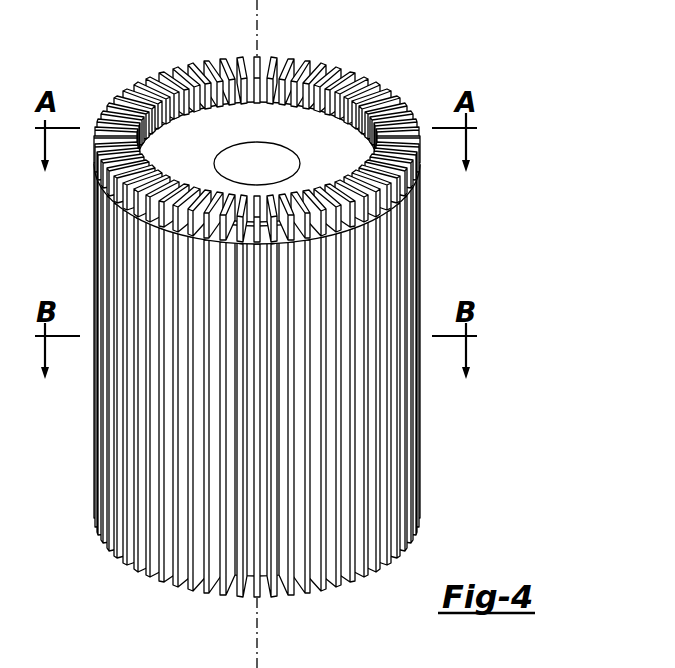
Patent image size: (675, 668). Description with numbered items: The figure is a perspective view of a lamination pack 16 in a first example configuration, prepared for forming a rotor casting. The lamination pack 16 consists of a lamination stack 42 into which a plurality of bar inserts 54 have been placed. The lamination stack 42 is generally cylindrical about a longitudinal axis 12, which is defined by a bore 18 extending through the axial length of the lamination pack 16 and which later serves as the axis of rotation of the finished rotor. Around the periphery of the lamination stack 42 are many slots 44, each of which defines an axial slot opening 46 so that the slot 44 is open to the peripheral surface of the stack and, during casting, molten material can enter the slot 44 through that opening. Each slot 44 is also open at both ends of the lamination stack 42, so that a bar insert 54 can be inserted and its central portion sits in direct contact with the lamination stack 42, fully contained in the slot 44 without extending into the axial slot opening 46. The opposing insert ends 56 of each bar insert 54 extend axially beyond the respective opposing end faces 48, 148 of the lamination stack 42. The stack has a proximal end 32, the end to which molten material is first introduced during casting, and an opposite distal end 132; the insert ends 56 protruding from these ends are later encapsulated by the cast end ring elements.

The axis 12 is at (260, 30).
The lamination pack 16 is at (496, 194).
The bore 18 is at (262, 163).
The proximal end 32 is at (428, 537).
The lamination stack 42 is at (437, 443).
The slot 44 is at (279, 92).
The axial slot opening 46 is at (383, 292).
The end face 48 is at (413, 533).
The bar insert 54 is at (118, 94).
The insert end 56 is at (334, 66).
The distal end 132 is at (415, 49).
The end face 148 is at (186, 135).